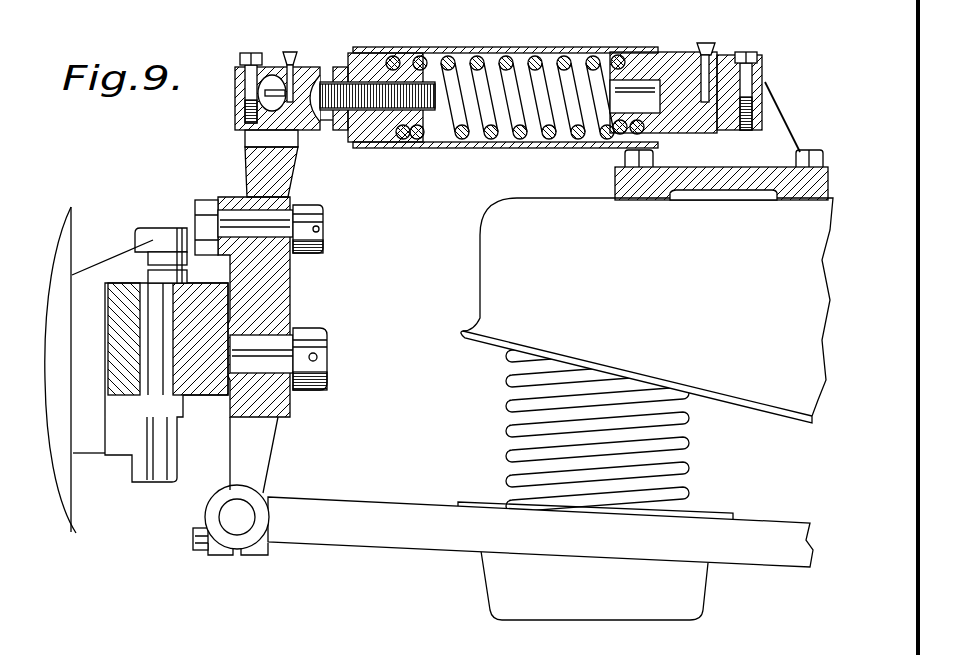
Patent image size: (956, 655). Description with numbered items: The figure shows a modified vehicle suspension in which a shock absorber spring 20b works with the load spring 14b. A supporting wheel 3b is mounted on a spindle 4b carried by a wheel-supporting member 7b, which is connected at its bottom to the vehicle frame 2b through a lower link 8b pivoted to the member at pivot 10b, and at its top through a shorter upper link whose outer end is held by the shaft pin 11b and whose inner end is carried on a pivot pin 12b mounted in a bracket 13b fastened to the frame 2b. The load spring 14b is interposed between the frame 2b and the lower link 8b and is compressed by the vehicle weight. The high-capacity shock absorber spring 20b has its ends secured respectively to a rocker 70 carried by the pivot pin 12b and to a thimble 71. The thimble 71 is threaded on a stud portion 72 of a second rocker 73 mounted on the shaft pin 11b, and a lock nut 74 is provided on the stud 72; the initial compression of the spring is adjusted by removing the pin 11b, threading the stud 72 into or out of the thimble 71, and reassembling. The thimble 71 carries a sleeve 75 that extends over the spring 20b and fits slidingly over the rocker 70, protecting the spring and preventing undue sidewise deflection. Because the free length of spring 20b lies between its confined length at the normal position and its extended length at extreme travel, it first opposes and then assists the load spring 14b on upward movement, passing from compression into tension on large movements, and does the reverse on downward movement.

The vehicle frame 2b is at (492, 257).
The supporting wheel 3b is at (71, 224).
The spindle 4b is at (112, 263).
The wheel-supporting member 7b is at (272, 281).
The lower link 8b is at (398, 545).
The pivot of lower link 10b is at (238, 516).
The pivot pin (shaft pin) 11b is at (284, 63).
The pivot pin 12b is at (714, 72).
The bracket 13b is at (804, 113).
The load spring 14b is at (525, 433).
The shock absorber spring 20b is at (487, 42).
The rocker 70 is at (690, 134).
The thimble 71 is at (360, 53).
The stud portion 72 is at (332, 66).
The rocker 73 is at (265, 129).
The lock nut 74 is at (338, 131).
The sleeve 75 is at (543, 54).